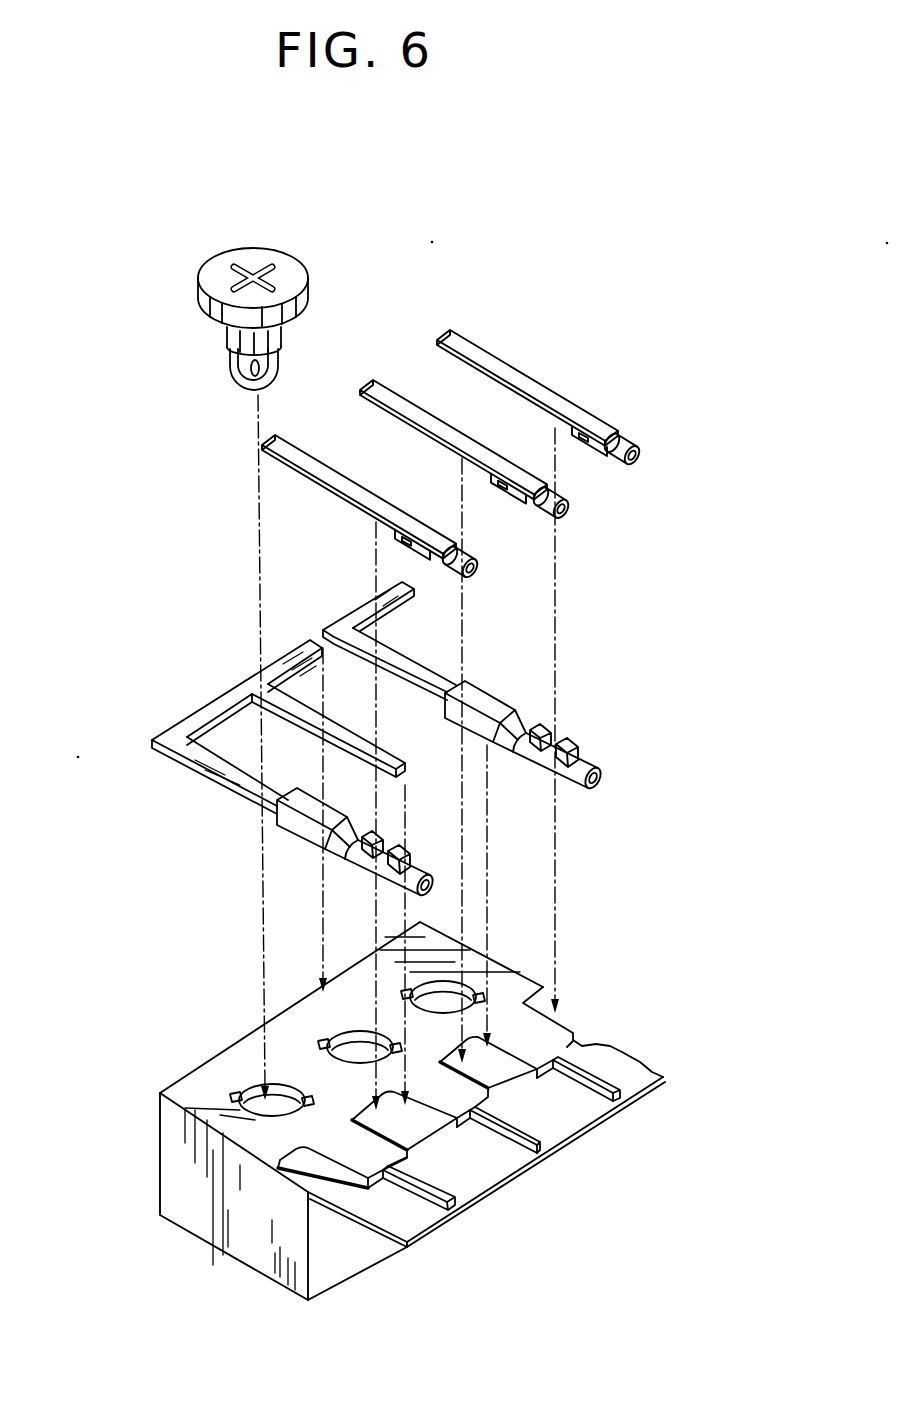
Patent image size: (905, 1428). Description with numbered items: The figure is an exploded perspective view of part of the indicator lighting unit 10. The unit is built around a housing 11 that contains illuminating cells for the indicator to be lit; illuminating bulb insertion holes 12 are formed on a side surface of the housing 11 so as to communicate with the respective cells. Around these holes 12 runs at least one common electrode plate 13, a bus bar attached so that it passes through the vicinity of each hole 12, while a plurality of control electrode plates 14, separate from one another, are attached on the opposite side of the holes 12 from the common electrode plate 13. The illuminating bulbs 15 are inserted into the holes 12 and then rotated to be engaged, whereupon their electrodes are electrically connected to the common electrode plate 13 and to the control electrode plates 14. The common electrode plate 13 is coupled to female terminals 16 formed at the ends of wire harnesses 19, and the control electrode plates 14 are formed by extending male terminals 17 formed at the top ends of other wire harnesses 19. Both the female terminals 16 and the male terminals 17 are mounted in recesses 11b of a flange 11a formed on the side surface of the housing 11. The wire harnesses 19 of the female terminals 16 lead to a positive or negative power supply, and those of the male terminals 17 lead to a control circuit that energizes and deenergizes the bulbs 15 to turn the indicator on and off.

The indicator lighting unit 10 is at (138, 516).
The housing 11 is at (213, 1232).
The flange 11a is at (372, 1246).
The recesses 11b is at (421, 1232).
The illuminating bulb insertion holes 12 is at (256, 1096).
The common electrode plate 13 is at (322, 620).
The control electrode plates 14 is at (532, 378).
The illuminating bulbs 15 is at (228, 367).
The female terminals 16 is at (500, 700).
The male terminals 17 is at (608, 428).
The wire harnesses 19 is at (641, 452).